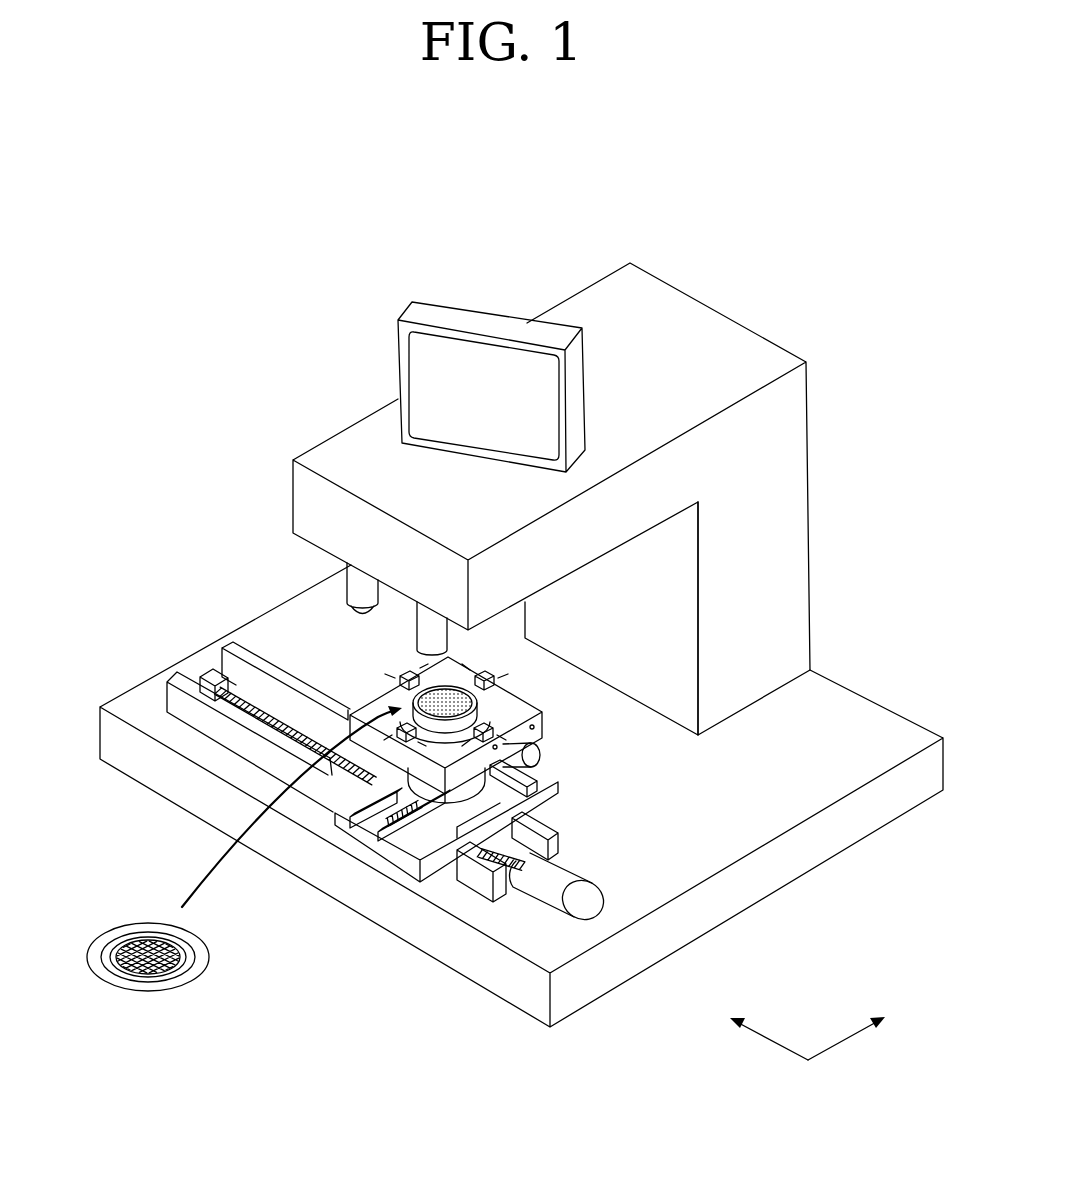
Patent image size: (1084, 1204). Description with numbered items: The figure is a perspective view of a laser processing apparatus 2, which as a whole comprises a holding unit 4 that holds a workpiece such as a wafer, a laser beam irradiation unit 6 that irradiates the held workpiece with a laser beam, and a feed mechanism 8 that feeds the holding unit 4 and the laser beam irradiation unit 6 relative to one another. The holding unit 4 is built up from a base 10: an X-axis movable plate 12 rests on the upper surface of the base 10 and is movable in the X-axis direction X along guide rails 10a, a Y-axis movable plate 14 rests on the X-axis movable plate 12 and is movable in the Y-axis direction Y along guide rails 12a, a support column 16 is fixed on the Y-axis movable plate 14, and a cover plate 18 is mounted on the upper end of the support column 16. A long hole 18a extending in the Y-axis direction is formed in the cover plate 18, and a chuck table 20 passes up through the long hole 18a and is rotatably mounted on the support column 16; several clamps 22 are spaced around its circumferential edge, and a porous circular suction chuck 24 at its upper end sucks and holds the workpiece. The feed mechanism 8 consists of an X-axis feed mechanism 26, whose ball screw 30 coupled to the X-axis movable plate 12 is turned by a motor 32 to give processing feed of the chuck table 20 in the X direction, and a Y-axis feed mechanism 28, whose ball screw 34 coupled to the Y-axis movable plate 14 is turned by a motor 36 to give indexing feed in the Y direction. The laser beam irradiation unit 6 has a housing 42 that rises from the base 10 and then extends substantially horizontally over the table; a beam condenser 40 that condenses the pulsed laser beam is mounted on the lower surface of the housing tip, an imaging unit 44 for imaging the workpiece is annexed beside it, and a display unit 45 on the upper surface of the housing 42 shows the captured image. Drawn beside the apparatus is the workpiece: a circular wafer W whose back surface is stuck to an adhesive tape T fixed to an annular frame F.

The laser processing apparatus 2 is at (186, 422).
The holding unit 4 is at (240, 915).
The laser beam irradiation unit 6 is at (809, 461).
The feed mechanism 8 is at (670, 763).
The base 10 is at (798, 800).
The guide rails 10a is at (232, 648).
The X-axis movable plate 12 is at (410, 867).
The guide rails 12a is at (348, 825).
The Y-axis movable plate 14 is at (480, 823).
The support column 16 is at (463, 787).
The cover plate 18 is at (368, 745).
The long hole 18a is at (502, 703).
The chuck table 20 is at (394, 673).
The clamps 22 is at (489, 680).
The suction chuck 24 is at (445, 693).
The X-axis feed mechanism 26 is at (618, 817).
The Y-axis feed mechanism 28 is at (618, 747).
The ball screw 30 is at (513, 837).
The motor 32 is at (562, 878).
The ball screw 34 is at (533, 783).
The motor 36 is at (533, 752).
The beam condenser 40 is at (353, 582).
The housing 42 is at (781, 584).
The imaging unit 44 is at (427, 607).
The display unit 45 is at (452, 315).
The annular frame F is at (150, 927).
The adhesive tape T is at (107, 958).
The wafer W is at (130, 940).
The X-axis direction X is at (755, 1030).
The Y-axis direction Y is at (856, 1028).